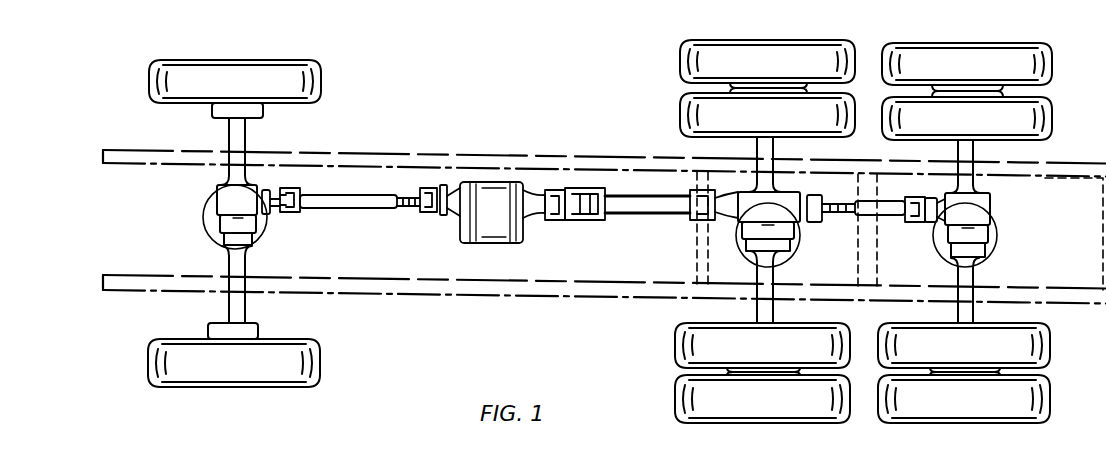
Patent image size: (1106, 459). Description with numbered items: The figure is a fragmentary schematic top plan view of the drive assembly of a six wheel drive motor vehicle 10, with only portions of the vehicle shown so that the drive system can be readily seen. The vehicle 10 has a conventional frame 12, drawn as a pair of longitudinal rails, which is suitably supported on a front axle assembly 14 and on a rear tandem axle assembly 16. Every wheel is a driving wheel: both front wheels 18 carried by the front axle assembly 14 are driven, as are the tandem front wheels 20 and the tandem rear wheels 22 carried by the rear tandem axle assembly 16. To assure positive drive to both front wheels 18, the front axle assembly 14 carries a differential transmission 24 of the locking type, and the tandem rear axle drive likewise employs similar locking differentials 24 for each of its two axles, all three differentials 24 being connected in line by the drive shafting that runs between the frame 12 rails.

The vehicle 10 is at (478, 142).
The frame 12 is at (372, 294).
The front axle assembly 14 is at (247, 150).
The rear tandem axle assembly 16 is at (952, 152).
The front wheels 18 is at (322, 86).
The tandem front wheels 20 is at (680, 112).
The tandem rear wheels 22 is at (1052, 110).
The differential transmission 24 is at (214, 230).